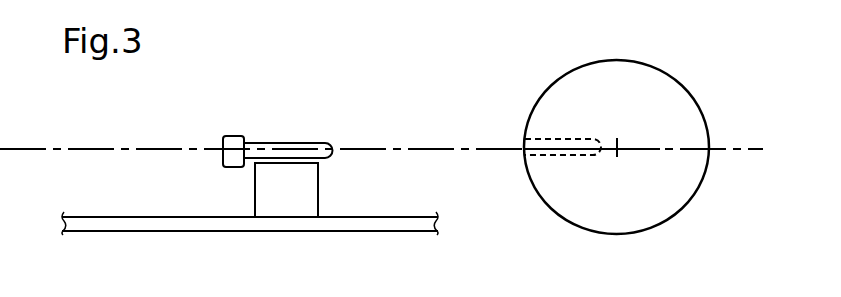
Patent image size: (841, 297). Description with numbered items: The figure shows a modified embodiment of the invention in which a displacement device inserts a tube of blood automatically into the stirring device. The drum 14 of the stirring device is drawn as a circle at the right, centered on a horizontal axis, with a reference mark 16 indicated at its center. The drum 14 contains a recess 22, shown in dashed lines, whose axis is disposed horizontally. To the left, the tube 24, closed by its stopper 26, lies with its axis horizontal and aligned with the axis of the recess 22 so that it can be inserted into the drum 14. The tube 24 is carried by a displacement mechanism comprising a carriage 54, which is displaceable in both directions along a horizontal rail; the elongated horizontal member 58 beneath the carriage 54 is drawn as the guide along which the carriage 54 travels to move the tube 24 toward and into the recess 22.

The drum 14 is at (672, 77).
The axis of rotation 16 is at (620, 150).
The recess 22 is at (525, 149).
The tube 24 is at (290, 143).
The stopper 26 is at (233, 136).
The carriage 54 is at (297, 212).
The base plate 58 is at (133, 232).